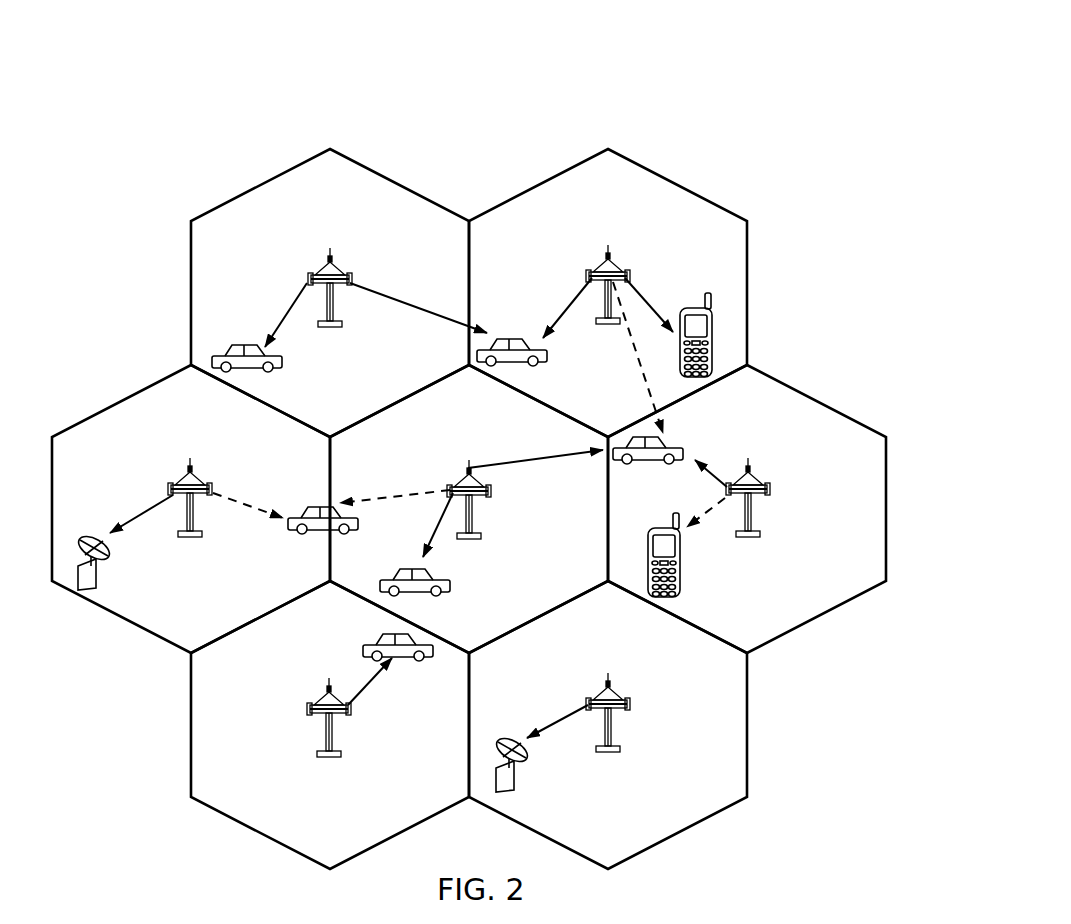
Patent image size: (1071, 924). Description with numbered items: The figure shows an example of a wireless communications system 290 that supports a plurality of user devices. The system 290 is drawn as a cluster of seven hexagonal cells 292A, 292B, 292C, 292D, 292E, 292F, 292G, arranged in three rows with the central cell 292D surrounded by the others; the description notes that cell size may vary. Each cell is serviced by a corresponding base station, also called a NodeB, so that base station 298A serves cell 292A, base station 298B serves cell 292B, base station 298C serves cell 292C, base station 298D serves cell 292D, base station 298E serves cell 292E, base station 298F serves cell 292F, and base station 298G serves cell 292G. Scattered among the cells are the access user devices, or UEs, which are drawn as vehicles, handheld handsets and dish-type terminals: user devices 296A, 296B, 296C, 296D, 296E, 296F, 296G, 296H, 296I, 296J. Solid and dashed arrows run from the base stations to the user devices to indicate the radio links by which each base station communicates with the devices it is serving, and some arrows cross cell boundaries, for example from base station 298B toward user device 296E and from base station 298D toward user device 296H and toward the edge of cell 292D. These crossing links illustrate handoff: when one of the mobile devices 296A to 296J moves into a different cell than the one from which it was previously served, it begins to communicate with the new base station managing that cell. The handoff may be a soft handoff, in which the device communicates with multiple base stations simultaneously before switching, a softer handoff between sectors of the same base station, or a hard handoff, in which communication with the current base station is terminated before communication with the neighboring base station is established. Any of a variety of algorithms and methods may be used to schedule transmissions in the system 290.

The wireless communications system 290 is at (762, 74).
The cell 292A is at (244, 192).
The cell 292B is at (697, 193).
The cell 292C is at (122, 396).
The cell 292D is at (490, 412).
The cell 292E is at (815, 396).
The cell 292F is at (227, 813).
The cell 292G is at (713, 813).
The base station 298A is at (330, 259).
The base station 298B is at (608, 254).
The base station 298C is at (190, 467).
The base station 298D is at (452, 486).
The base station 298E is at (748, 467).
The base station 298F is at (329, 687).
The base station 298G is at (608, 683).
The access user device 296A is at (283, 363).
The access user device 296B is at (700, 308).
The access user device 296C is at (97, 578).
The access user device 296D is at (452, 585).
The access user device 296E is at (643, 461).
The access user device 296F is at (430, 657).
The access user device 296G is at (515, 785).
The access user device 296H is at (288, 519).
The access user device 296I is at (683, 572).
The access user device 296J is at (510, 337).